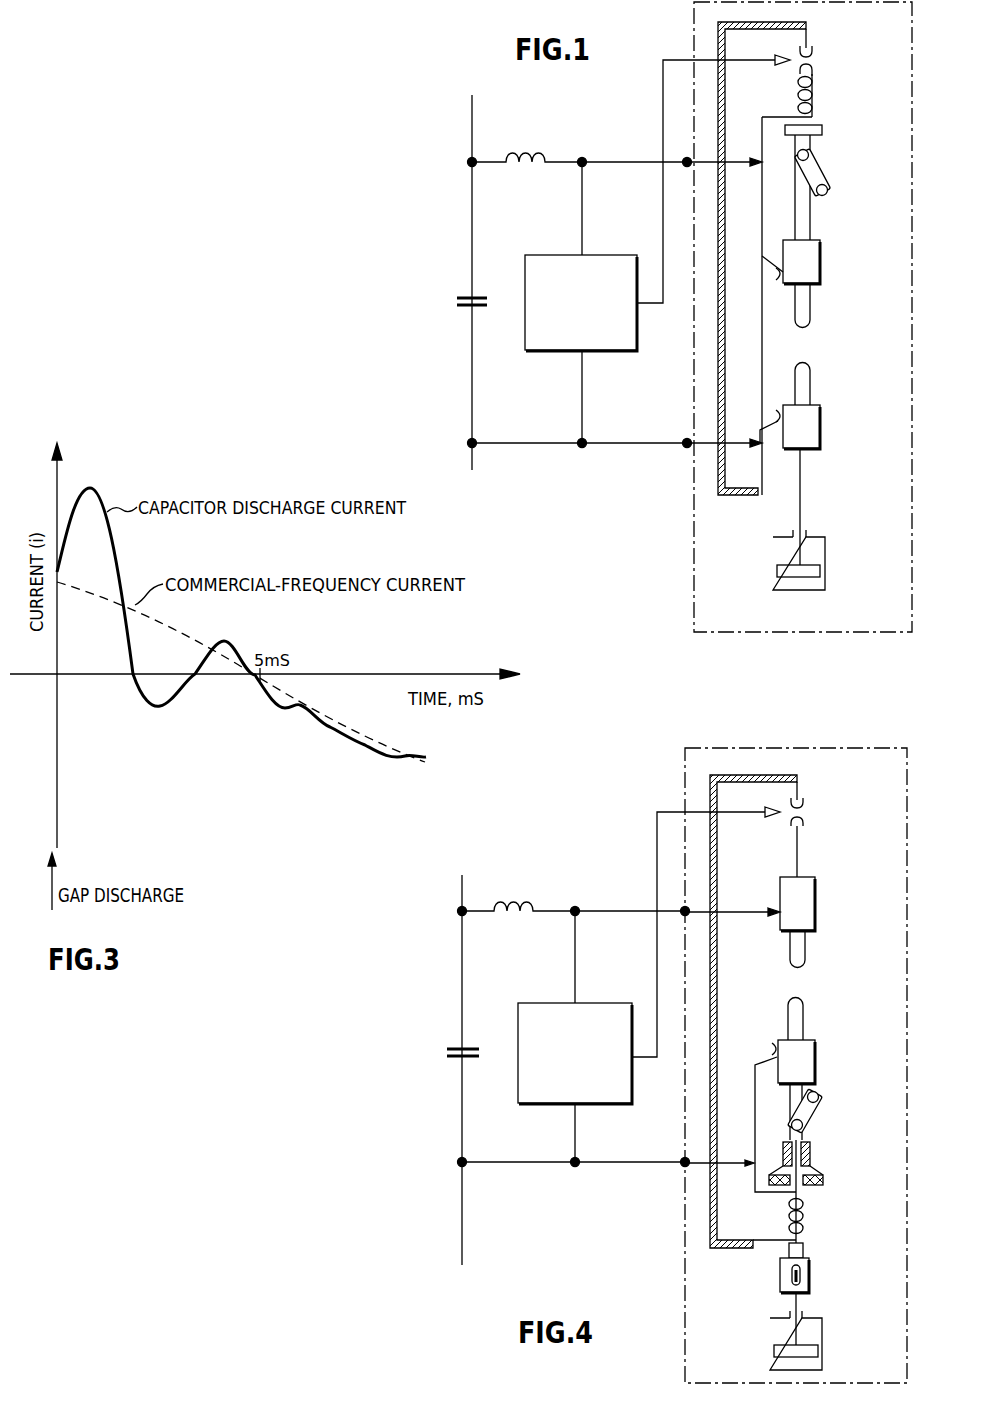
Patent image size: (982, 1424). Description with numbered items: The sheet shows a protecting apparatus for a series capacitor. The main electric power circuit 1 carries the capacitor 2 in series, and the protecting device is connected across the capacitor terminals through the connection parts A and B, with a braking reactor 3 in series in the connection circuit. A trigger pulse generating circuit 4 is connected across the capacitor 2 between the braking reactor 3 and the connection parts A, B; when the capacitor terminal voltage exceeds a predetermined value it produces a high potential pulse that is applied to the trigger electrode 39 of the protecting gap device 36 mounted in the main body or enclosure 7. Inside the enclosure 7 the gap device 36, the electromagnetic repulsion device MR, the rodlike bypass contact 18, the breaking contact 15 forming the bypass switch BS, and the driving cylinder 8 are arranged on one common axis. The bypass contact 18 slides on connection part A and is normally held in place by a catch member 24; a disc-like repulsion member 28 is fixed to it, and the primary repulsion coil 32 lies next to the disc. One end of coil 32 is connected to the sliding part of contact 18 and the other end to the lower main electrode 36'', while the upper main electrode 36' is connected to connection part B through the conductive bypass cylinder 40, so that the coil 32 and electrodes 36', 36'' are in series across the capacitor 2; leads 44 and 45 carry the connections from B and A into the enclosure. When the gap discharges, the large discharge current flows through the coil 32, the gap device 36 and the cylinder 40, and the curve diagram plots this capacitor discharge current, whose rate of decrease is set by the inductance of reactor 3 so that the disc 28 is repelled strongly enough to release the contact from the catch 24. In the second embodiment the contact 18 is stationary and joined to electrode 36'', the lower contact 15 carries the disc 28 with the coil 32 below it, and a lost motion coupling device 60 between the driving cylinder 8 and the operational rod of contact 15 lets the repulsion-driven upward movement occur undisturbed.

In FIG. 1, the main electric power circuit 1 is at (472, 113).
In FIG. 4, the main electric power circuit 1 is at (464, 887).
In FIG. 1, the capacitor 2 is at (466, 296).
In FIG. 4, the capacitor 2 is at (458, 1045).
In FIG. 1, the braking reactor 3 is at (522, 155).
In FIG. 4, the braking reactor 3 is at (524, 902).
In FIG. 1, the trigger pulse generating circuit 4 is at (600, 255).
In FIG. 4, the trigger pulse generating circuit 4 is at (594, 1003).
In FIG. 1, the main body or enclosure 7 is at (690, 376).
In FIG. 4, the main body or enclosure 7 is at (685, 1114).
In FIG. 1, the driving cylinder 8 is at (826, 551).
In FIG. 4, the driving cylinder 8 is at (823, 1339).
In FIG. 1, the breaking contact 15 is at (812, 379).
In FIG. 4, the breaking contact 15 is at (808, 1013).
In FIG. 1, the bypass contact 18 is at (812, 321).
In FIG. 4, the bypass contact 18 is at (808, 945).
In FIG. 1, the catch member 24 is at (826, 181).
In FIG. 4, the catch member 24 is at (820, 1106).
In FIG. 1, the repulsion member 28 is at (823, 131).
In FIG. 4, the repulsion member 28 is at (824, 1176).
In FIG. 1, the primary repulsion coil 32 is at (798, 93).
In FIG. 4, the primary repulsion coil 32 is at (806, 1214).
In FIG. 1, the protecting gap device 36 is at (845, 51).
In FIG. 4, the protecting gap device 36 is at (837, 806).
In FIG. 1, the upper main electrode 36' is at (824, 40).
In FIG. 4, the upper main electrode 36' is at (815, 788).
In FIG. 1, the lower main electrode 36'' is at (830, 75).
In FIG. 4, the lower main electrode 36'' is at (823, 831).
In FIG. 1, the trigger electrode 39 is at (789, 58).
In FIG. 4, the trigger electrode 39 is at (778, 808).
In FIG. 1, the bypass cylinder 40 is at (730, 497).
In FIG. 4, the bypass cylinder 40 is at (712, 1023).
In FIG. 1, the lead B 44 is at (735, 445).
In FIG. 4, the lead B 44 is at (727, 1163).
In FIG. 1, the lead A 45 is at (737, 164).
In FIG. 4, the lead A 45 is at (737, 915).
In FIG. 4, the lost motion coupling device 60 is at (809, 1279).
In FIG. 1, the connection part A is at (679, 149).
In FIG. 4, the connection part A is at (674, 898).
In FIG. 1, the connection part B is at (679, 430).
In FIG. 4, the connection part B is at (672, 1146).
In FIG. 1, the bypass switch BS is at (790, 353).
In FIG. 4, the bypass switch BS is at (791, 987).
In FIG. 1, the electromagnetic repulsion device MR is at (820, 114).
In FIG. 4, the electromagnetic repulsion device MR is at (817, 1192).